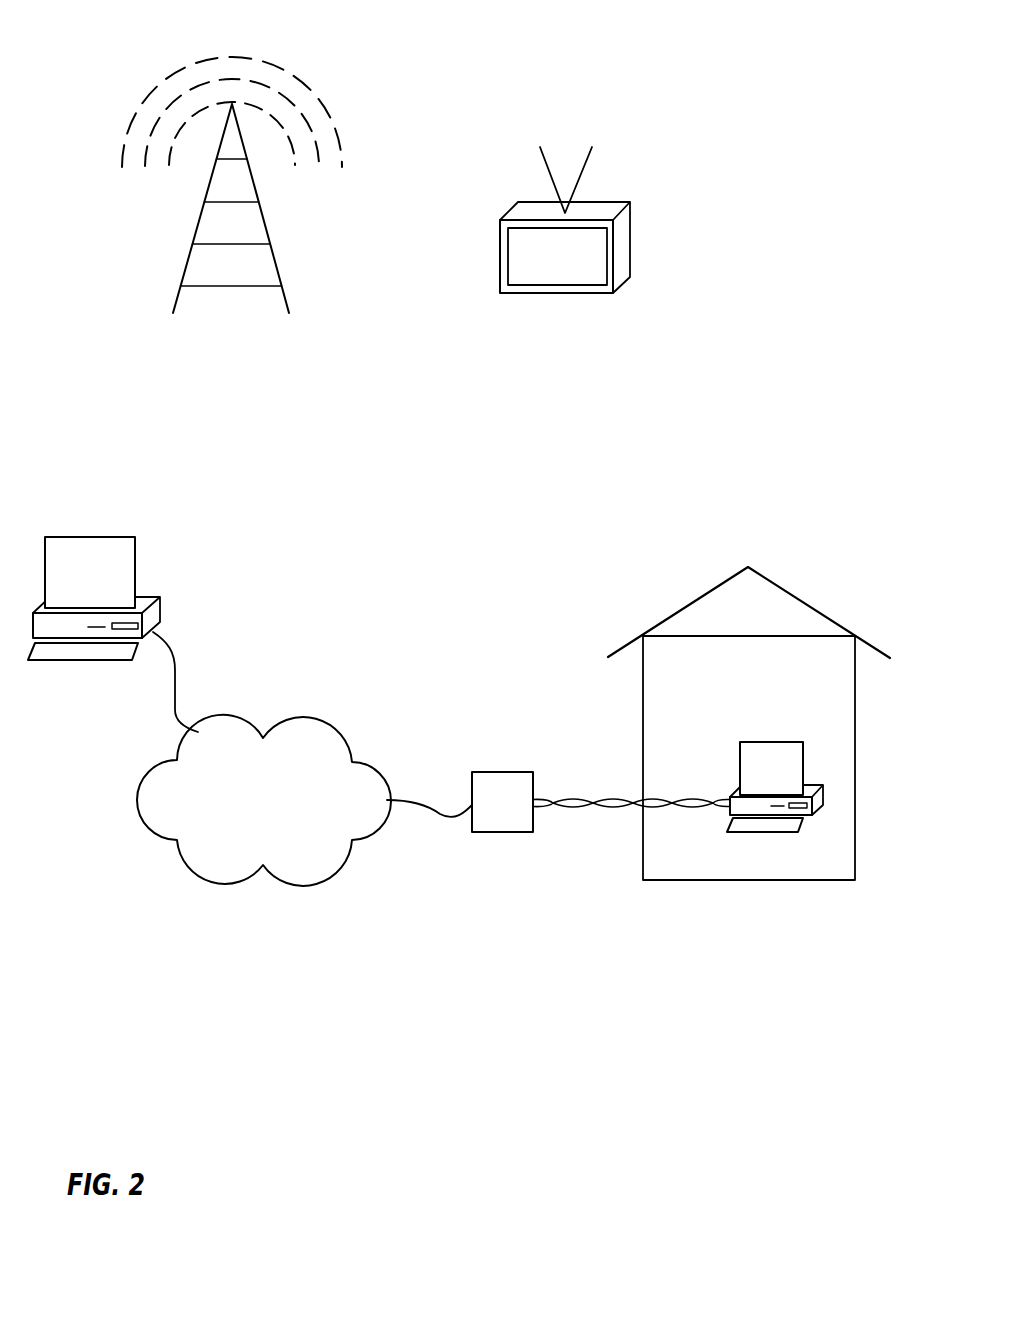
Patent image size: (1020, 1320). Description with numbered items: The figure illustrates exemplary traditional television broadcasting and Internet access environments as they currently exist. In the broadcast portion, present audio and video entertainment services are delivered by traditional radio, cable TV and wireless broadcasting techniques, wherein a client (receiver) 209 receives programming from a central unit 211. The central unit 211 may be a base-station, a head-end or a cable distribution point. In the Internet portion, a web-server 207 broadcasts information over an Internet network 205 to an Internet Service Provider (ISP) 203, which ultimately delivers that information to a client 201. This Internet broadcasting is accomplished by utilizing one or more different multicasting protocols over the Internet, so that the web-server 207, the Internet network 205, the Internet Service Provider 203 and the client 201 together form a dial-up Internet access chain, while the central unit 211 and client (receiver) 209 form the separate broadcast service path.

The client 201 is at (815, 770).
The Internet Service Provider (ISP) 203 is at (502, 772).
The Internet network 205 is at (302, 720).
The web-server 207 is at (135, 567).
The client (receiver) 209 is at (633, 247).
The central unit 211 is at (348, 92).